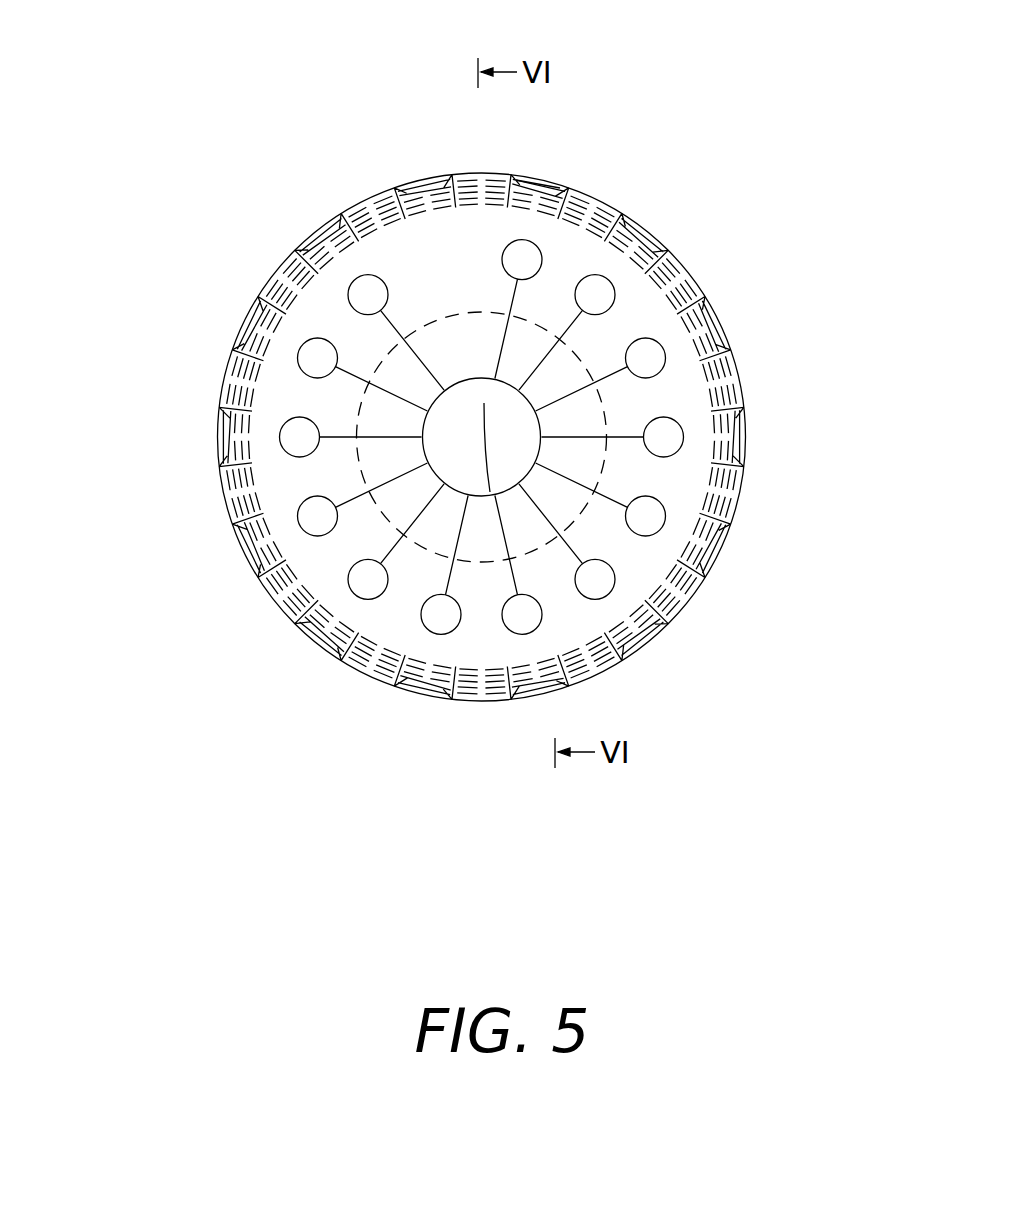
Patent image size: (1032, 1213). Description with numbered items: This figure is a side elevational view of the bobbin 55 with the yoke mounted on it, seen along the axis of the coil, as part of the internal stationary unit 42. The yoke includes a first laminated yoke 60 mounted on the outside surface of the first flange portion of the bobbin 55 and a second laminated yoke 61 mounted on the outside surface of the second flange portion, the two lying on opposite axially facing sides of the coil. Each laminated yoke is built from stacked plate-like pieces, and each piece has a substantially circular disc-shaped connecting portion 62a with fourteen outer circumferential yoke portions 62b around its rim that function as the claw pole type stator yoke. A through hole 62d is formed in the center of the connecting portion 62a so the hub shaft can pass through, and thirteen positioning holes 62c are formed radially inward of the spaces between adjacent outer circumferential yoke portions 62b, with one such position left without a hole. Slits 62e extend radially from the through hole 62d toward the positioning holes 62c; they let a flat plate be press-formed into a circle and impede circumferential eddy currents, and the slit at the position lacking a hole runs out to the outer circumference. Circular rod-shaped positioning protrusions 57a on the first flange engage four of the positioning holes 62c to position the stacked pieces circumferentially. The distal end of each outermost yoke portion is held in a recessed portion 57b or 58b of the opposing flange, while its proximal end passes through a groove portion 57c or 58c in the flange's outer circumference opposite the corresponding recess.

The rotor / impeller assembly 42 is at (770, 385).
The bobbin 55 is at (592, 358).
The positioning protrusions 57a is at (514, 252).
The recessed portion 57b is at (537, 177).
The groove portion 57c is at (240, 552).
The recessed portion 58b is at (213, 487).
The groove portion 58c is at (287, 622).
The first laminated yoke 60 is at (362, 192).
The second laminated yoke 61 is at (656, 224).
The connecting portion 62a is at (600, 527).
The outer circumferential yoke portions 62b is at (267, 273).
The positioning holes 62c is at (520, 262).
The through hole 62d is at (340, 503).
The slits 62e is at (382, 362).